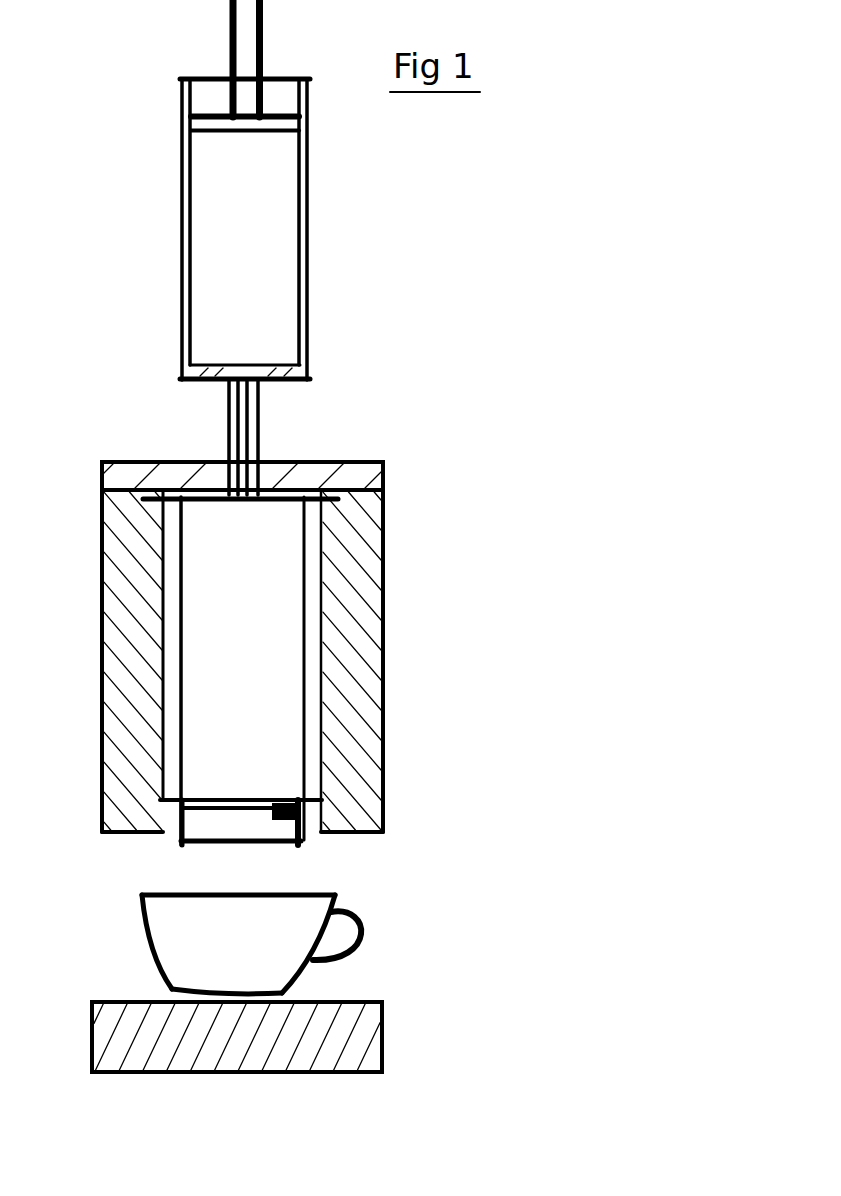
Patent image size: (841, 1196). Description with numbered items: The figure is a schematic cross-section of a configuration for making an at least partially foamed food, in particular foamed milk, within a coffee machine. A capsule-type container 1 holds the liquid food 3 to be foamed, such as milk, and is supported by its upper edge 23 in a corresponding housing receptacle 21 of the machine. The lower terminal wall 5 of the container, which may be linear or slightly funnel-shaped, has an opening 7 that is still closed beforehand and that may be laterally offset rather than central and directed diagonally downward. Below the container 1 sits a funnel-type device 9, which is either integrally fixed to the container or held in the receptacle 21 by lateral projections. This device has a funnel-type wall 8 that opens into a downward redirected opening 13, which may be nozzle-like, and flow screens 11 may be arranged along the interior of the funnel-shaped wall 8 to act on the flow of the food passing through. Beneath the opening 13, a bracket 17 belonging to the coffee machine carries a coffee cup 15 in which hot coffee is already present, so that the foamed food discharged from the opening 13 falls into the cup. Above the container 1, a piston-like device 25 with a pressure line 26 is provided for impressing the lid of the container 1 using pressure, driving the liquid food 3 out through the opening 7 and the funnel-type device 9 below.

The capsule-type container 1 is at (305, 597).
The liquid food 3 is at (250, 676).
The lower terminal wall 5 is at (210, 797).
The opening 7 is at (282, 797).
The funnel-type wall 8 is at (178, 834).
The funnel-type device 9 is at (300, 835).
The flow screens 11 is at (273, 813).
The downward redirected opening 13 is at (243, 845).
The coffee cup 15 is at (297, 940).
The bracket 17 is at (353, 1028).
The housing receptacle 21 is at (385, 642).
The upper edge 23 is at (385, 487).
The piston-like device 25 is at (275, 122).
The pressure line 26 is at (242, 418).